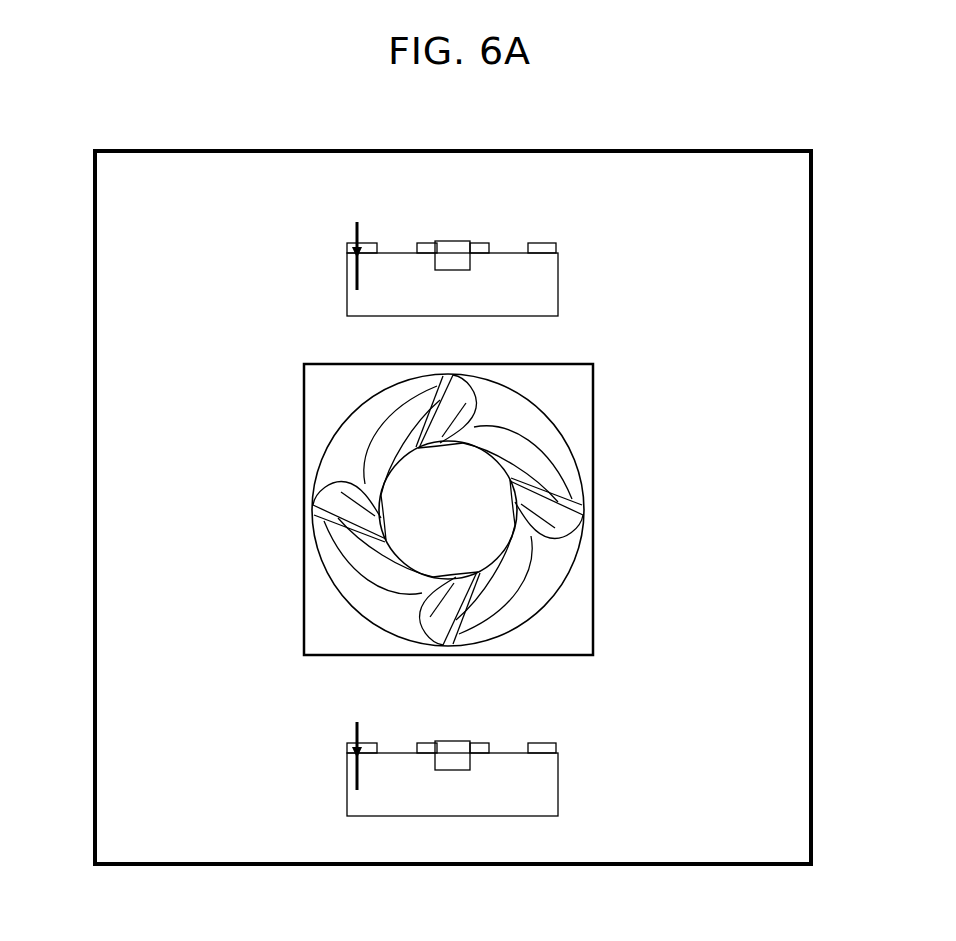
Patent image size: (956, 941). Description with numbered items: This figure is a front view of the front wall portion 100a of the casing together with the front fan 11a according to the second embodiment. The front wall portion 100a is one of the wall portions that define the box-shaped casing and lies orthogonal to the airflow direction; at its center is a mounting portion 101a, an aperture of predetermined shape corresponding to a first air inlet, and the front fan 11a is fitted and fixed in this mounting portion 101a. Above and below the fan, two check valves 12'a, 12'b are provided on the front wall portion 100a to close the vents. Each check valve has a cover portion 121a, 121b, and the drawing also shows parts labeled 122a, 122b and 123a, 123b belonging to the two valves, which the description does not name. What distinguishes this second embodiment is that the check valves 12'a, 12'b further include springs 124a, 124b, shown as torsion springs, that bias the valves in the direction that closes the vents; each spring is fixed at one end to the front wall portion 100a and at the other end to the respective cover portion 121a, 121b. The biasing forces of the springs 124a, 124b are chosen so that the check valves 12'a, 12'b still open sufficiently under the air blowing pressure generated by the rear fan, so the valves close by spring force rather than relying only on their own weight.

The front wall portion 100a is at (695, 90).
The front fan 11a is at (441, 509).
The mounting portion 101a is at (290, 541).
The check valve 12'a is at (466, 255).
The check valve 12'b is at (466, 755).
The cover portion 121a is at (355, 299).
The cover portion 121b is at (355, 799).
The terminal 122a is at (373, 245).
The terminal 122b is at (373, 745).
The sensor element 123a is at (453, 263).
The sensor element 123b is at (453, 763).
The spring 124a is at (355, 236).
The spring 124b is at (355, 736).